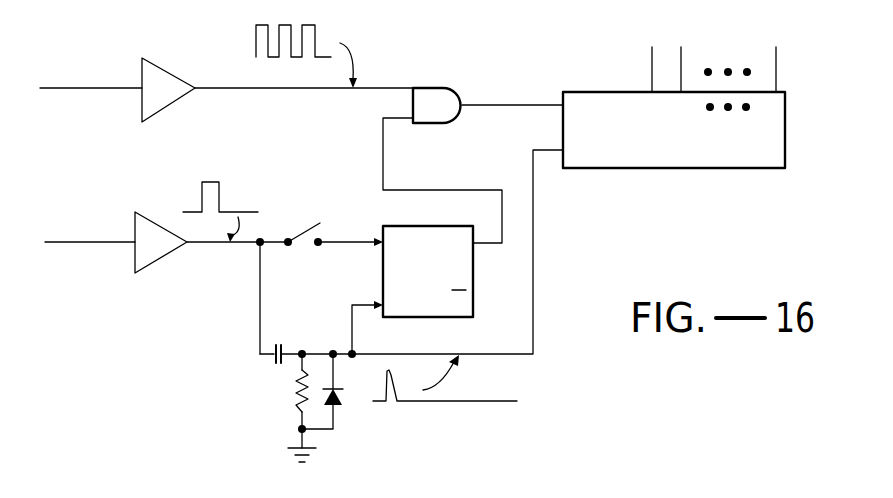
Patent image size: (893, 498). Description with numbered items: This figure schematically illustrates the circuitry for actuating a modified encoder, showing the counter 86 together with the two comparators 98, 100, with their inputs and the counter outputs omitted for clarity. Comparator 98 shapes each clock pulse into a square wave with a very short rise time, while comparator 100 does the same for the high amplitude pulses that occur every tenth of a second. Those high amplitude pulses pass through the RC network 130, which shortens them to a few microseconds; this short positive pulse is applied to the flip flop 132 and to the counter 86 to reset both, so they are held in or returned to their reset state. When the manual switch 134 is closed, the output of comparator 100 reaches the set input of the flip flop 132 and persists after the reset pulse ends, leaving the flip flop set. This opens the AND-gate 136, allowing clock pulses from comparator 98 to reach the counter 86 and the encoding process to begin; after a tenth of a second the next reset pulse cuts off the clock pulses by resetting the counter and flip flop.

The comparator 98 is at (175, 93).
The comparator 100 is at (147, 258).
The RC network 130 is at (266, 382).
The flip flop 132 is at (415, 233).
The manual switch 134 is at (310, 228).
The AND-gate 136 is at (445, 100).
The counter 86 is at (693, 162).